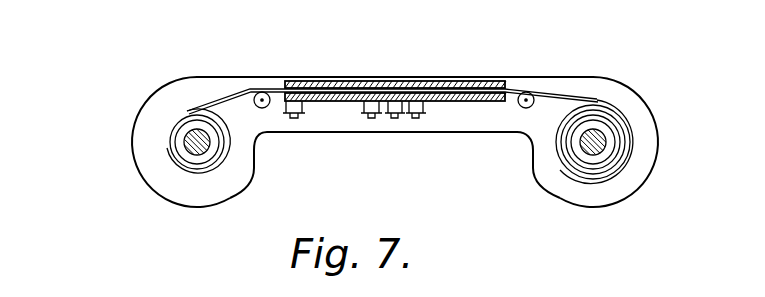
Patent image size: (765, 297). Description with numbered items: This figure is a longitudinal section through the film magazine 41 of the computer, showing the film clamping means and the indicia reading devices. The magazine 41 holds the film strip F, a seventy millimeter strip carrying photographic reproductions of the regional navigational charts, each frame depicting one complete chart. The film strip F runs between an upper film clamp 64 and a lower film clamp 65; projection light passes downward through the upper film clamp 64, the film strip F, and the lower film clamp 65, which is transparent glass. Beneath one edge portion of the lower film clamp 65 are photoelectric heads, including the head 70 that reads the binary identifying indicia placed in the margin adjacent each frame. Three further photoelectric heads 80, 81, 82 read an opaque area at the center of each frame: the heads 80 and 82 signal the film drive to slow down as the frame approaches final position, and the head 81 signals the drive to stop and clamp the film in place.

The magazine 41 is at (130, 120).
The film strip F is at (233, 91).
The upper film clamp 64 is at (433, 82).
The lower film clamp 65 is at (478, 102).
The photoelectric head 70 is at (294, 118).
The photoelectric head 80 is at (372, 118).
The photoelectric head 81 is at (395, 118).
The photoelectric head 82 is at (416, 118).